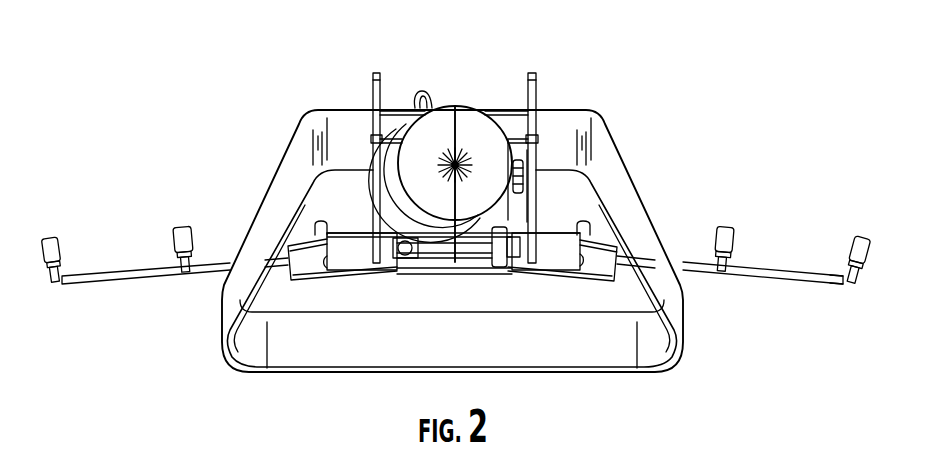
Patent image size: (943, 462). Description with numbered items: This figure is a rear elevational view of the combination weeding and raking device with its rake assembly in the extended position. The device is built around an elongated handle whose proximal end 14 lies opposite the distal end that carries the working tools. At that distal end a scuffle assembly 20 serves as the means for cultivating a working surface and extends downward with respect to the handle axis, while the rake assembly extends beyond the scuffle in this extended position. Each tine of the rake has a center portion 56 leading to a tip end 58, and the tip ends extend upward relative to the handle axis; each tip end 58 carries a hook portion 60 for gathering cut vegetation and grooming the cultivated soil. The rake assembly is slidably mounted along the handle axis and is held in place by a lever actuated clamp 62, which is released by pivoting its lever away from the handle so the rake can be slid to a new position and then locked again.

The proximal end 14 is at (471, 112).
The scuffle assembly 20 is at (290, 153).
The center portion 56 is at (745, 267).
The tip end 58 is at (860, 238).
The hook portion 60 is at (842, 284).
The lever actuated clamp 62 is at (500, 213).